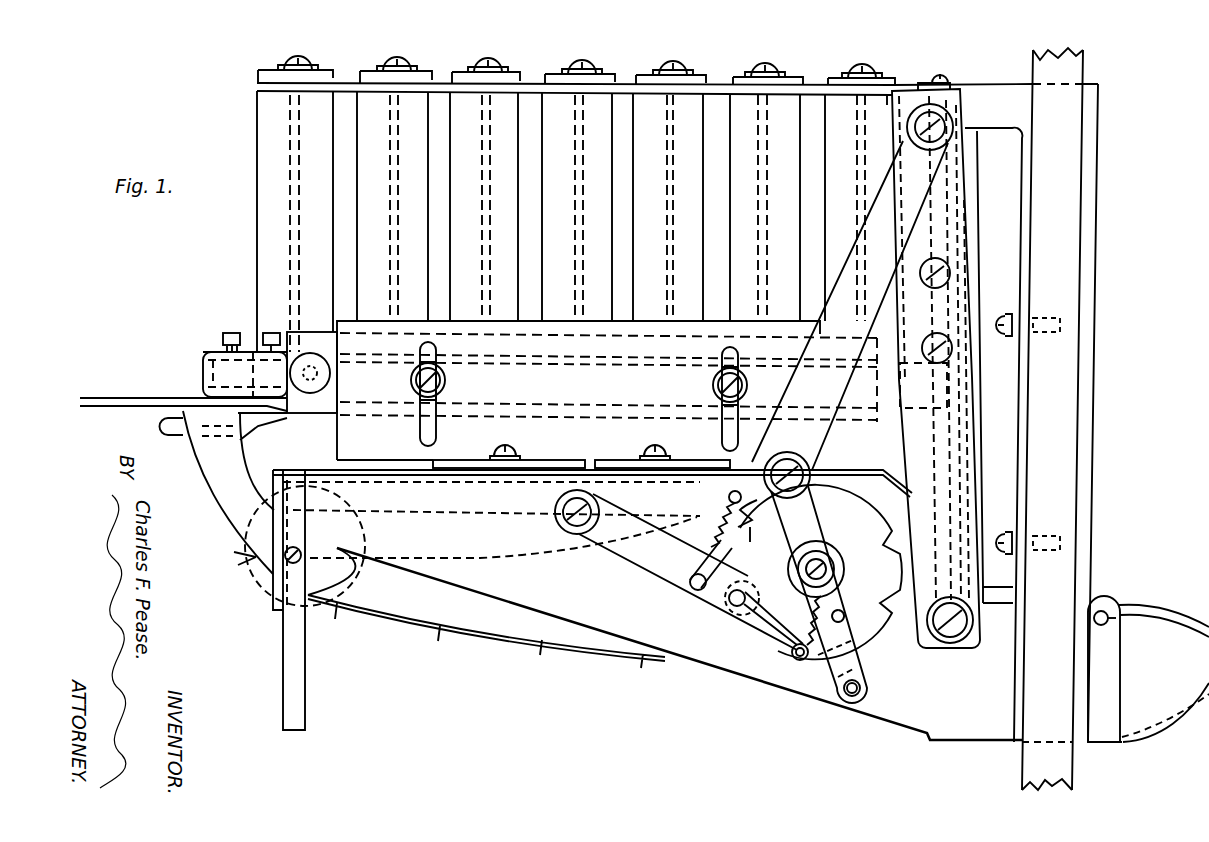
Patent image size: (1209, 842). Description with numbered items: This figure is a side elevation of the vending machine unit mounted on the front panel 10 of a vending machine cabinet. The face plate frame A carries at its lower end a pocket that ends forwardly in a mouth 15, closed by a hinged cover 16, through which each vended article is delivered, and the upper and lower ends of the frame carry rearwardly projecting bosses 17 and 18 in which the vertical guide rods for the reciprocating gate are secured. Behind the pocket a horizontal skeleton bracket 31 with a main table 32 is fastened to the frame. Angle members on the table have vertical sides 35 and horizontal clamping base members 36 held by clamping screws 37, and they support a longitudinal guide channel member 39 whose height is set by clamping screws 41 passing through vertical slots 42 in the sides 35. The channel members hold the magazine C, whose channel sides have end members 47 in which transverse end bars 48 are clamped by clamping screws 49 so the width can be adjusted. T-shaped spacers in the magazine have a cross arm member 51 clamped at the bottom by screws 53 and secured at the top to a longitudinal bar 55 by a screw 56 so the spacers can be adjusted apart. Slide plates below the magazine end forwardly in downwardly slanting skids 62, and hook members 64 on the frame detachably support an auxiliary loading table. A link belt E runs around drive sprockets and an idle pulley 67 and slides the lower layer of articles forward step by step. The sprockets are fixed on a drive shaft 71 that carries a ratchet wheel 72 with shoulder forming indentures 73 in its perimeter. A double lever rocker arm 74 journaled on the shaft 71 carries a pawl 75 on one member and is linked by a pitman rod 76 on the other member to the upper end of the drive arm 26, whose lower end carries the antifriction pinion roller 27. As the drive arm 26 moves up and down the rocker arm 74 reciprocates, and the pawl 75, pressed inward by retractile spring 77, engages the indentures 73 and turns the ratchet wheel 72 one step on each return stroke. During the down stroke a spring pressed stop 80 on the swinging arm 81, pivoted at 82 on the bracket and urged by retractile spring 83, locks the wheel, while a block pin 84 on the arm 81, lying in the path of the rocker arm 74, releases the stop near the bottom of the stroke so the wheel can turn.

The front panel 10 is at (1065, 445).
The mouth 15 is at (1175, 722).
The hinged cover 16 is at (1175, 613).
The bosses 17 is at (990, 88).
The bosses 18 is at (998, 592).
The drive arm 26 is at (968, 430).
The antifriction actuating pinion roller 27 is at (947, 653).
The horizontal skeleton bracket 31 is at (679, 644).
The horizontal main table 32 is at (378, 470).
The vertical sides 35 is at (642, 390).
The horizontal clamping base members 36 is at (586, 470).
The clamping screws 37 is at (560, 438).
The longitudinal guide channel member 39 is at (317, 412).
The clamping screws 41 is at (447, 378).
The vertical slots 42 is at (437, 434).
The end members 47 is at (205, 352).
The transverse end bars 48 is at (205, 365).
The clamping screws 49 is at (232, 333).
The cross arm member 51 is at (265, 115).
The screws 53 is at (266, 330).
The longitudinal bar 55 is at (527, 75).
The screw 56 is at (305, 61).
The downwardly slanting skids 62 is at (884, 478).
The hook members 64 is at (160, 425).
The idle pulley 67 is at (350, 581).
The drive shaft 71 is at (826, 560).
The ratchet wheel 72 is at (821, 572).
The shoulder forming indentures 73 is at (742, 580).
The double lever pawl supporting rocker arm 74 is at (860, 657).
The pawl 75 is at (820, 672).
The pitman rod 76 is at (850, 305).
The retractile spring 77 is at (785, 640).
The spring pressed stop 80 is at (730, 602).
The swinging arm 81 is at (637, 563).
The pivot 82 is at (556, 525).
The retractile spring 83 is at (728, 504).
The block pin 84 is at (697, 580).
The face plate frame A is at (1093, 236).
The magazine C is at (212, 352).
The feed belt E is at (526, 645).